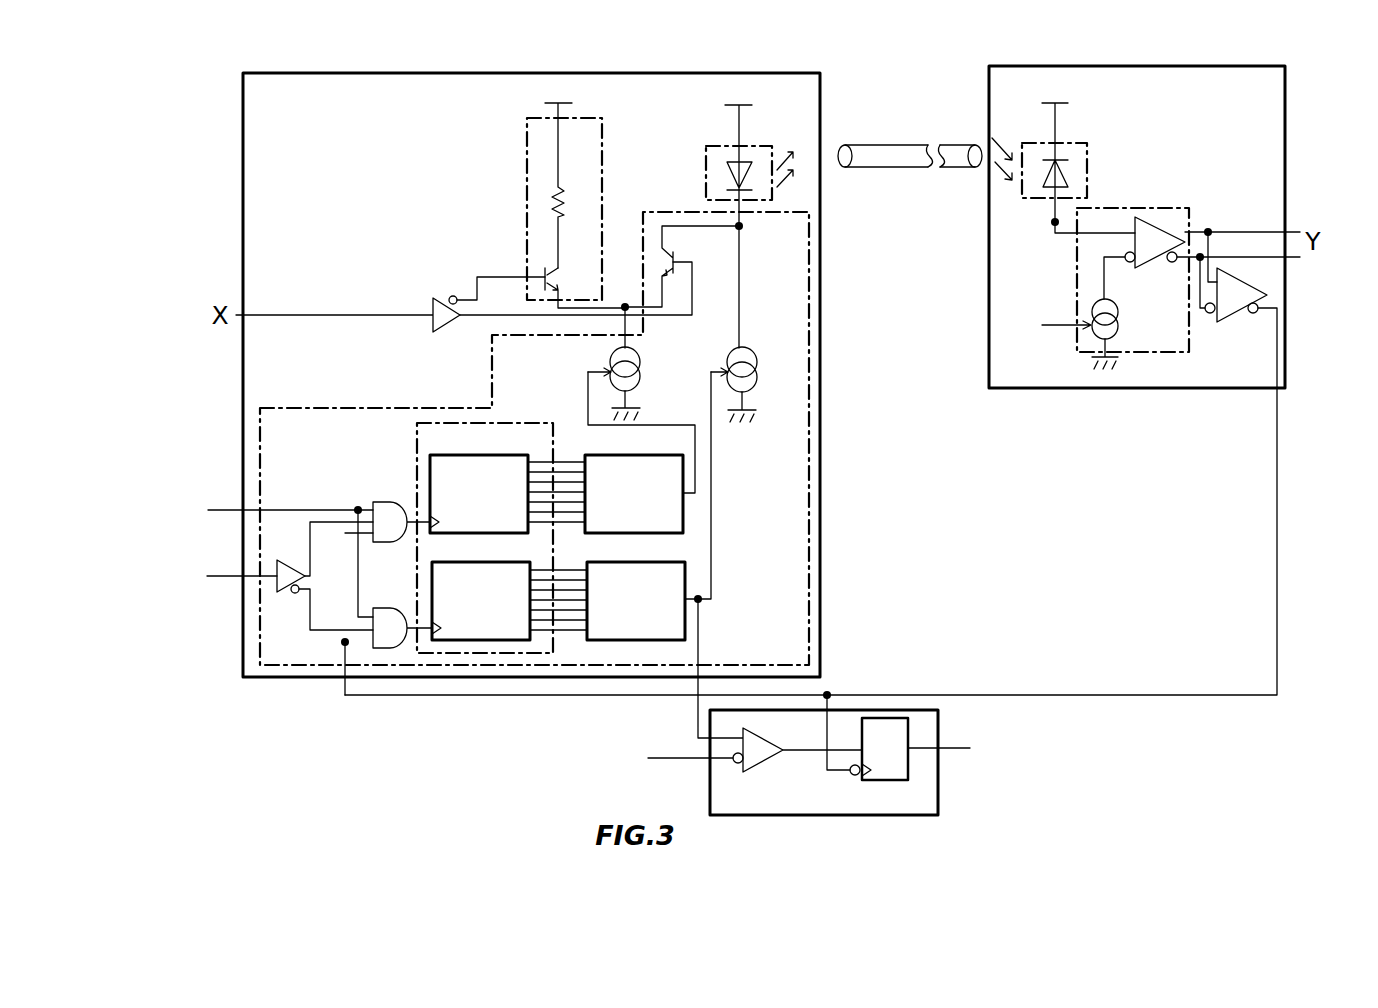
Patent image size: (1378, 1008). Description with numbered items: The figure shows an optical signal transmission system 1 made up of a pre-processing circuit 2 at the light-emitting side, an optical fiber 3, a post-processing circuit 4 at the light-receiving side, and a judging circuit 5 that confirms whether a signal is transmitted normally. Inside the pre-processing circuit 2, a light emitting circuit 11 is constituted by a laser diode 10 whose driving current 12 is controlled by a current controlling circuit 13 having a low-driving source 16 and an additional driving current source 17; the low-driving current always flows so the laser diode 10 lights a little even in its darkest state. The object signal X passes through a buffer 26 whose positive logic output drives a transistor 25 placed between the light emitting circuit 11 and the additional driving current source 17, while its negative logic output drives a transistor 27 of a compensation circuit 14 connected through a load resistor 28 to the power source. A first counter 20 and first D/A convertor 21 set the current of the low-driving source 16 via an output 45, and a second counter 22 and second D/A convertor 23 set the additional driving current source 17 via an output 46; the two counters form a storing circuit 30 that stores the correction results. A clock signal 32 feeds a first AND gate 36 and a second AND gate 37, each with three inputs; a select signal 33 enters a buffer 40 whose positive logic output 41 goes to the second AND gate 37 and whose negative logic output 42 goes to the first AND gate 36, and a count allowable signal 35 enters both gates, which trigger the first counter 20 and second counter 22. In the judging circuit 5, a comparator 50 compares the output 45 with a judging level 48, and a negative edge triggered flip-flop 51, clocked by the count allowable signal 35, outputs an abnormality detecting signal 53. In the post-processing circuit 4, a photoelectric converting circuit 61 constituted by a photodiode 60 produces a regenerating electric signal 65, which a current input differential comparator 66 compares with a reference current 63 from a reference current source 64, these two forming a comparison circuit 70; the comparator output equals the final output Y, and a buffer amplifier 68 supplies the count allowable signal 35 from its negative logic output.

The optical signal transmission system 1 is at (1095, 818).
The pre-processing circuit 2 is at (820, 113).
The optical fiber 3 is at (904, 145).
The post-processing circuit 4 is at (1286, 182).
The judging circuit 5 is at (939, 723).
The laser diode 10 is at (710, 174).
The light emitting circuit 11 is at (762, 146).
The driving current 12 is at (742, 298).
The current controlling circuit 13 is at (821, 432).
The compensation circuit 14 is at (526, 127).
The low-driving source 16 is at (731, 357).
The additional driving current source 17 is at (642, 370).
The first counter 20 is at (488, 562).
The first D/A convertor 21 is at (638, 562).
The second counter 22 is at (485, 455).
The second D/A convertor 23 is at (637, 453).
The transistor 25 is at (682, 254).
The buffer 26 is at (432, 297).
The transistor 27 is at (557, 273).
The load resistor 28 is at (564, 200).
The storing circuit 30 is at (514, 422).
The clock signal 32 is at (272, 510).
The select signal 33 is at (232, 578).
The count allowable signal 35 is at (1277, 446).
The first AND gate 36 is at (377, 609).
The second AND gate 37 is at (377, 502).
The buffer 40 is at (280, 592).
The positive logic output 41 is at (310, 559).
The negative logic output 42 is at (310, 614).
The output of the first D/A convertor 45 is at (715, 476).
The output of the second D/A convertor 46 is at (659, 426).
The judging level 48 is at (699, 758).
The comparator 50 is at (766, 730).
The flip-flop 51 is at (878, 780).
The abnormality detecting signal 53 is at (941, 752).
The photodiode 60 is at (1087, 176).
The photoelectric converting circuit 61 is at (1087, 143).
The reference current 63 is at (1090, 291).
The reference current source 64 is at (1121, 324).
The regenerating electric signal 65 is at (1048, 226).
The current input differential comparator 66 is at (1150, 267).
The buffer amplifier 68 is at (1233, 318).
The comparison circuit 70 is at (1189, 208).